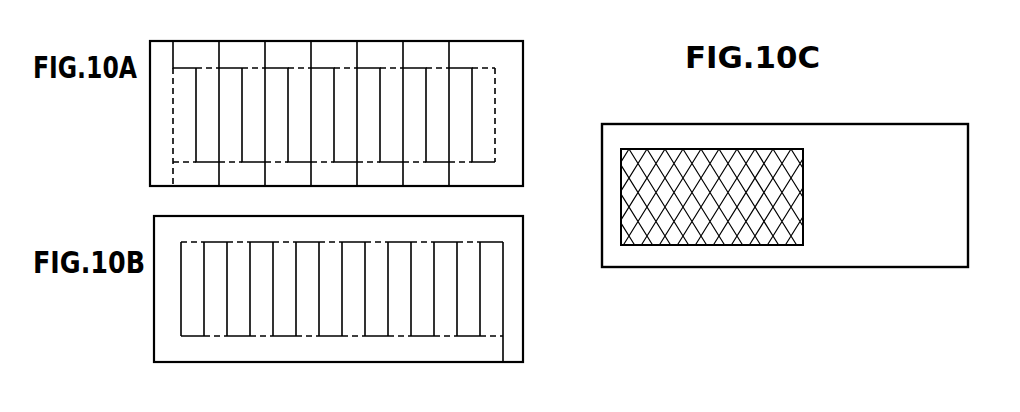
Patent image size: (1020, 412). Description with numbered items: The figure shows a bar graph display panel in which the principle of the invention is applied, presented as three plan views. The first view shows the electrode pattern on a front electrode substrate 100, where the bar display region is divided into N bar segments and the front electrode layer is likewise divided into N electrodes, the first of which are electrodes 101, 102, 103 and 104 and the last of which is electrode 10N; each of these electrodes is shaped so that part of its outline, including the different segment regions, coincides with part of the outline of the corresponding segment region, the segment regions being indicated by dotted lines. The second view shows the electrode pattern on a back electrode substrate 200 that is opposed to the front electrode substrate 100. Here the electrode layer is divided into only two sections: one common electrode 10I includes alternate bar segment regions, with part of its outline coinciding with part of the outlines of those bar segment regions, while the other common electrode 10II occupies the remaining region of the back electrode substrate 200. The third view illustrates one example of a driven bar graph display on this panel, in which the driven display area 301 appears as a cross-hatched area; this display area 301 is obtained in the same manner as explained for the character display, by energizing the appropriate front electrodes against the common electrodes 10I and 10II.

In FIG. 10A, the front electrode substrate 100 is at (524, 70).
In FIG. 10A, the front electrode 101 is at (196, 178).
In FIG. 10A, the front electrode 102 is at (197, 50).
In FIG. 10A, the front electrode 103 is at (240, 178).
In FIG. 10A, the front electrode 104 is at (247, 51).
In FIG. 10A, the front electrode 10N is at (501, 48).
In FIG. 10B, the back electrode substrate 200 is at (560, 252).
In FIG. 10B, the common electrode 10I is at (163, 308).
In FIG. 10B, the common electrode 10II is at (513, 282).
In FIG. 10C, the display area 301 is at (692, 165).